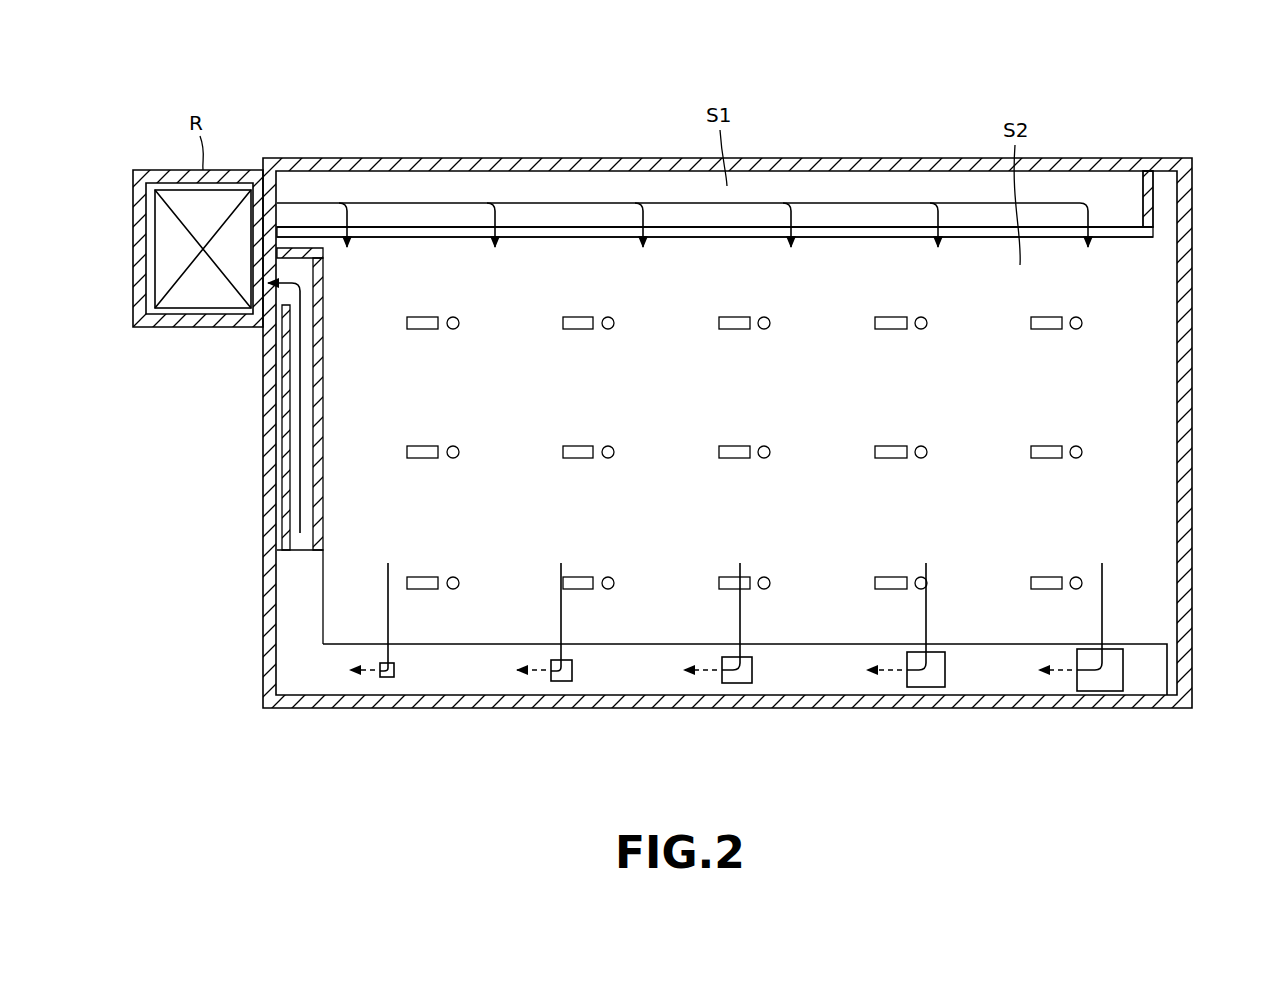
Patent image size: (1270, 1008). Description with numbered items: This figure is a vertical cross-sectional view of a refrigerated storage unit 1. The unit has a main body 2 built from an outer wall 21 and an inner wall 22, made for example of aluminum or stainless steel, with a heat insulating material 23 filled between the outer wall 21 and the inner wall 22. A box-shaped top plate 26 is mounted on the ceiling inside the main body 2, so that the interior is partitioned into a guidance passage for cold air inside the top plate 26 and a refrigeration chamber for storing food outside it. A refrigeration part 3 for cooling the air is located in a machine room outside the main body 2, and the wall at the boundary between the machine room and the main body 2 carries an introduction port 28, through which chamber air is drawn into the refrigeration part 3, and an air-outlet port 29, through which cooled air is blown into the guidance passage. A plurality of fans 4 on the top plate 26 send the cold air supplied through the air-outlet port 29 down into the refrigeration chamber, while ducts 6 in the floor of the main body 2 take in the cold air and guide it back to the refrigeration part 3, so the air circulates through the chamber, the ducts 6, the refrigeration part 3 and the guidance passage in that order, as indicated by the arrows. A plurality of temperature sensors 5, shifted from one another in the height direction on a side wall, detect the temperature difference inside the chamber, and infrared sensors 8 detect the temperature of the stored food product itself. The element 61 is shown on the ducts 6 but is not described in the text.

The refrigerated storage unit 1 is at (1152, 143).
The main body 2 is at (1250, 272).
The outer wall 21 is at (1195, 283).
The inner wall 22 is at (1172, 356).
The heat insulating material 23 is at (1185, 322).
The refrigeration part 3 is at (193, 300).
The fans 4 is at (362, 232).
The temperature sensors 5 is at (422, 577).
The ducts 6 is at (805, 680).
The hanger carriers 61 is at (385, 678).
The infrared sensors 8 is at (455, 577).
The top plate 26 is at (871, 232).
The introduction port 28 is at (266, 295).
The air-outlet port 29 is at (280, 198).